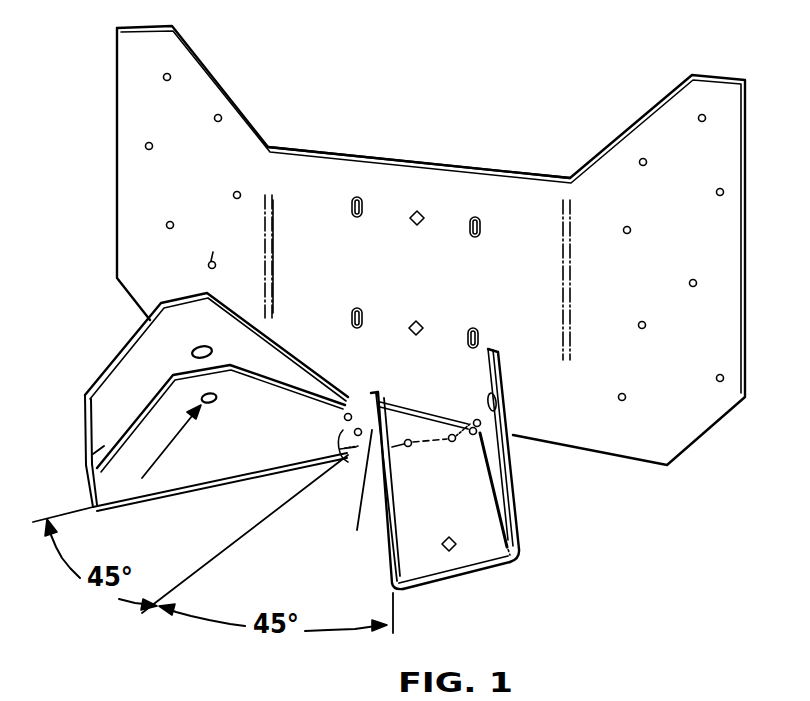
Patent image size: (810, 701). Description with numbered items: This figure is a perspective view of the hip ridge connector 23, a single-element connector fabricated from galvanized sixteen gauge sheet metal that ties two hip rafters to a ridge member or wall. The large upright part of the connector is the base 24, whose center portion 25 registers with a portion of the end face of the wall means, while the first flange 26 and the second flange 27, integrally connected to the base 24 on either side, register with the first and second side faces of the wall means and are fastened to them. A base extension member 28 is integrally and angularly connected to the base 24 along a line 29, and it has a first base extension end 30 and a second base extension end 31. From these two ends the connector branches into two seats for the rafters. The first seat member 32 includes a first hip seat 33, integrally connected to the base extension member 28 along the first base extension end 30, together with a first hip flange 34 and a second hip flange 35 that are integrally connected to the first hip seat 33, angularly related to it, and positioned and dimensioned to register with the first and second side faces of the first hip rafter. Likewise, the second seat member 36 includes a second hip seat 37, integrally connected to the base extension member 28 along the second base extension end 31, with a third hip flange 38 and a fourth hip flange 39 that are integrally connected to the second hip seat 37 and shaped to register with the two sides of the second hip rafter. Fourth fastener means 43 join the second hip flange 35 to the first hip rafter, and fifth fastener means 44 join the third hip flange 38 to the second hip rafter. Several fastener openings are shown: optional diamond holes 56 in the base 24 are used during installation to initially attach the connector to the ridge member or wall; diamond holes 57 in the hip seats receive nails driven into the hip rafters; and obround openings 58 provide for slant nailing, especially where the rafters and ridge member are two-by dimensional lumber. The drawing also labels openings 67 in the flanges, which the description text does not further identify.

The hip ridge connector 23 is at (526, 121).
The base 24 is at (396, 158).
The center portion 25 is at (453, 292).
The first flange 26 is at (205, 172).
The second flange 27 is at (688, 244).
The base extension member 28 is at (409, 428).
The line 29 is at (438, 420).
The first base extension end 30 is at (345, 447).
The second base extension end 31 is at (477, 437).
The first seat member 32 is at (178, 402).
The first hip seat 33 is at (84, 466).
The first hip flange 34 is at (143, 412).
The second hip flange 35 is at (233, 460).
The second seat member 36 is at (507, 490).
The second hip seat 37 is at (460, 521).
The third hip flange 38 is at (378, 500).
The fourth hip flange 39 is at (518, 472).
The fourth fastener means 43 is at (158, 458).
The fifth fastener means 44 is at (357, 531).
The diamond holes 56 is at (411, 324).
The diamond holes 57 is at (450, 552).
The obround openings 58 is at (356, 307).
The mounting holes 67 is at (237, 199).